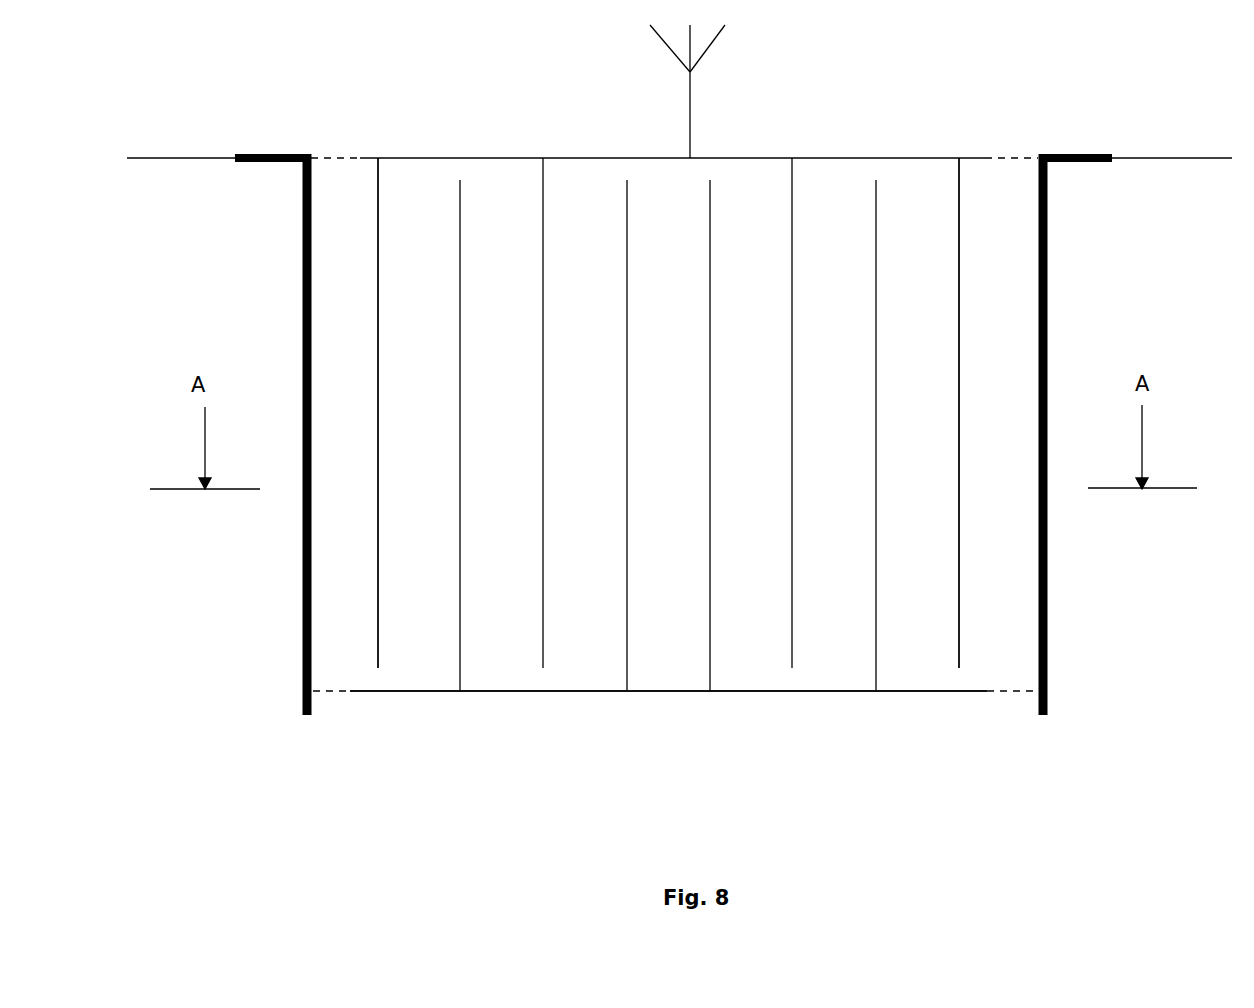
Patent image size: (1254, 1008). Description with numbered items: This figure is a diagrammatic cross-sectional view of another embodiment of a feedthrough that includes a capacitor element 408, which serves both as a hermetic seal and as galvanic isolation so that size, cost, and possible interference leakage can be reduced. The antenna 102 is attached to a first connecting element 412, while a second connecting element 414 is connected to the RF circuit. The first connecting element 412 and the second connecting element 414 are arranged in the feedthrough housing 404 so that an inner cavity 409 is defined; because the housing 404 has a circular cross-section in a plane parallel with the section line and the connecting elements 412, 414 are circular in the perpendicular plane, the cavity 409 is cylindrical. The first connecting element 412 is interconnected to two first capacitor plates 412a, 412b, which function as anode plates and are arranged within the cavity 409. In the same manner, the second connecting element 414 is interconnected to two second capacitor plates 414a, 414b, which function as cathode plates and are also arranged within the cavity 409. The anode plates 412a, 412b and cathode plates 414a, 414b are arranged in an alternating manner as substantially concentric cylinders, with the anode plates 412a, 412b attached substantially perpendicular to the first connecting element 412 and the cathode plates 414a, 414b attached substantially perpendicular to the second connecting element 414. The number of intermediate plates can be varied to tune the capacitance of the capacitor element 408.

The antenna 102 is at (690, 78).
The feedthrough housing 404 is at (1046, 300).
The capacitor element 408 is at (480, 126).
The inner cavity 409 is at (428, 675).
The first connecting element 412 is at (835, 152).
The first capacitor plate 412a is at (378, 233).
The first capacitor plate 412b is at (542, 368).
The second connecting element 414 is at (860, 691).
The second capacitor plate 414a is at (457, 333).
The second capacitor plate 414b is at (625, 325).